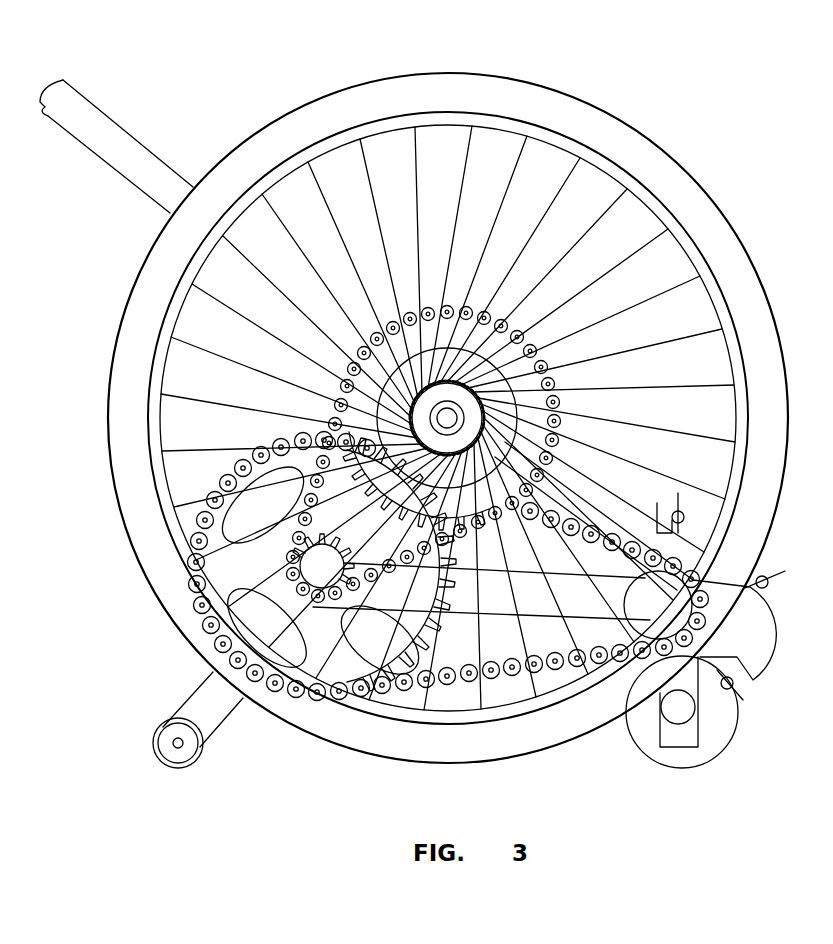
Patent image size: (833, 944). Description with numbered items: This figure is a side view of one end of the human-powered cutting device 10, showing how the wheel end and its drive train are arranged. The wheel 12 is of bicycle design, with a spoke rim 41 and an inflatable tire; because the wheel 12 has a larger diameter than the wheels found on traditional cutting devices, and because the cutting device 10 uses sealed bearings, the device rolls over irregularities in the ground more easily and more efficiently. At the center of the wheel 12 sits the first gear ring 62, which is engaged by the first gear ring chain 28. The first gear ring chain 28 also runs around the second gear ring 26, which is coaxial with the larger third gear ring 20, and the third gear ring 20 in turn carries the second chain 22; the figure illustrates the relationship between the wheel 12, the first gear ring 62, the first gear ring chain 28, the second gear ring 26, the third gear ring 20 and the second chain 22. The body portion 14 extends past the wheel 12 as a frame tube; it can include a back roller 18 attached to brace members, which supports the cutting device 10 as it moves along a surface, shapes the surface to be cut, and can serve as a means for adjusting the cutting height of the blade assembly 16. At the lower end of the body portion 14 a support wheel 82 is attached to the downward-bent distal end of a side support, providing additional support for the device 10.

The cutting device 10 is at (704, 111).
The wheel 12 is at (152, 284).
The body portion 14 is at (120, 143).
The blade assembly 16 is at (763, 637).
The roller 18 is at (170, 725).
The third gear ring 20 is at (232, 568).
The second chain 22 is at (550, 664).
The second gear ring 26 is at (322, 600).
The first gear ring chain 28 is at (328, 377).
The spoke rim 41 is at (500, 206).
The first gear ring 62 is at (513, 317).
The support wheel 82 is at (687, 757).